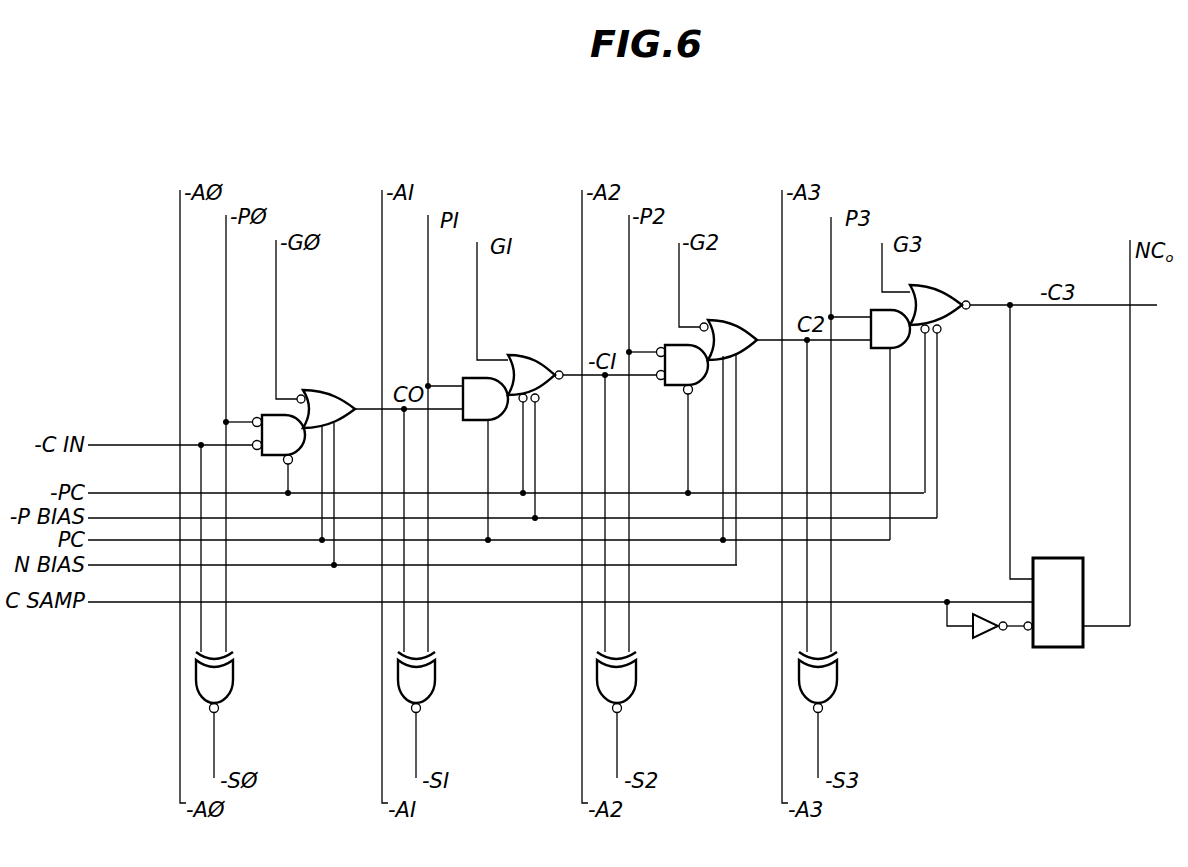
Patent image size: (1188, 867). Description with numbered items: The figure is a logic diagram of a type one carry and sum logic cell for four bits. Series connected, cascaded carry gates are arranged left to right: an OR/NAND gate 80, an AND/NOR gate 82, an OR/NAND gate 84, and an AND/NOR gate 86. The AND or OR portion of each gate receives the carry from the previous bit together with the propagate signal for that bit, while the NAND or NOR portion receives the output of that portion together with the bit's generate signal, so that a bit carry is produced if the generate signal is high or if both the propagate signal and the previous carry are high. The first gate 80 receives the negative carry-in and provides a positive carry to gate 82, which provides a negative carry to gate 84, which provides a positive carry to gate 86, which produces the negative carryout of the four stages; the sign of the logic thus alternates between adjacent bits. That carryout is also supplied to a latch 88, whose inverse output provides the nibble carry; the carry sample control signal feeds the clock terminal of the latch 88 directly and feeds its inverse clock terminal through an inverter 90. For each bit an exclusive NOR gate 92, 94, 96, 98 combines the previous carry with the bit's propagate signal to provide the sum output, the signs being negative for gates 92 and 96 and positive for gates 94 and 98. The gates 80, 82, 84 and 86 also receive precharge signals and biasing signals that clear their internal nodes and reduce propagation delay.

The OR/NAND gate 80 is at (313, 388).
The AND/NOR gate 82 is at (518, 353).
The OR/NAND gate 84 is at (730, 318).
The AND/NOR gate 86 is at (950, 265).
The latch 88 is at (1053, 558).
The inverter 90 is at (985, 640).
The exclusive NOR gate 92 is at (233, 680).
The exclusive NOR gate 94 is at (435, 680).
The exclusive NOR gate 96 is at (636, 680).
The exclusive NOR gate 98 is at (837, 680).